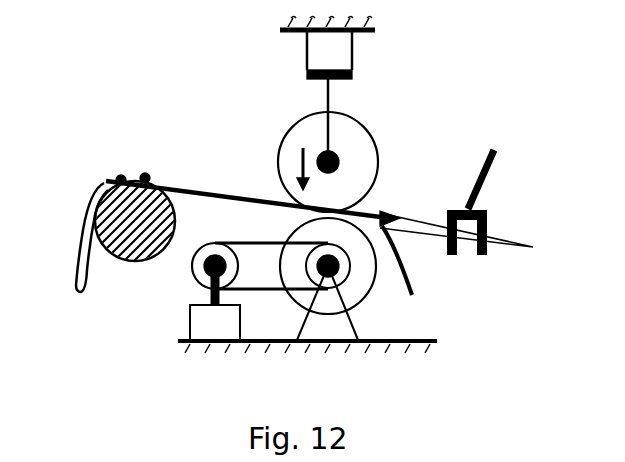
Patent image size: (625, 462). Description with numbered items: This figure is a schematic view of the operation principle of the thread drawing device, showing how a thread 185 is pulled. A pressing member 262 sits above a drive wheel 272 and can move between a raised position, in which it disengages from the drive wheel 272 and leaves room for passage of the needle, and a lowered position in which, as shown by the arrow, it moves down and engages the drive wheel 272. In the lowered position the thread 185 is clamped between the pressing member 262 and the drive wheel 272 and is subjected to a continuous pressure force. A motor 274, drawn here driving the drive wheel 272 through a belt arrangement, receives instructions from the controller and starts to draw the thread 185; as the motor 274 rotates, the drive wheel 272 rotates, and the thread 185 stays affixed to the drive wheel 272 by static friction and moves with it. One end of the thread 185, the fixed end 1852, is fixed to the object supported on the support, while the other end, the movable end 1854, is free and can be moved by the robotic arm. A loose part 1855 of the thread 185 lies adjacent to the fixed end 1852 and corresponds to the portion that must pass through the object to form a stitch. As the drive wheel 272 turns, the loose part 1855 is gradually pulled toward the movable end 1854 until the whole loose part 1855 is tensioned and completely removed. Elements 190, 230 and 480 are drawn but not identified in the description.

The thread 185 is at (200, 190).
The supply roll 190 is at (143, 260).
The clamp / gripper 230 is at (490, 175).
The pressing member 262 is at (368, 135).
The drive wheel 272 is at (360, 290).
The motor 274 is at (200, 325).
The cut web piece / output strip 480 is at (520, 247).
The fixed end 1852 is at (118, 178).
The movable end 1854 is at (390, 214).
The loose part 1855 is at (80, 224).